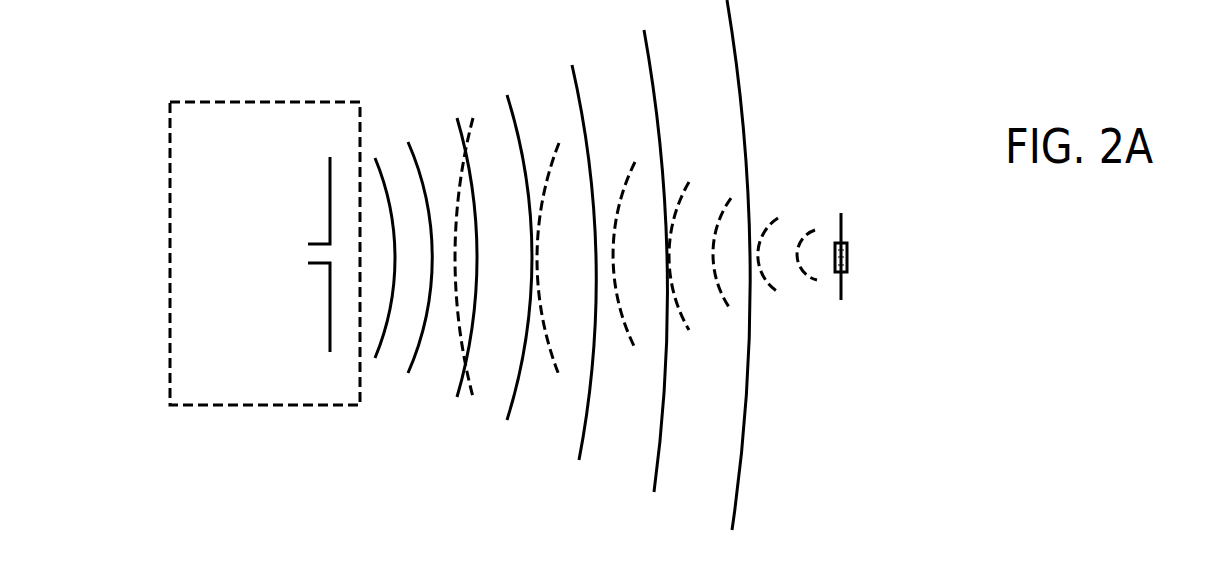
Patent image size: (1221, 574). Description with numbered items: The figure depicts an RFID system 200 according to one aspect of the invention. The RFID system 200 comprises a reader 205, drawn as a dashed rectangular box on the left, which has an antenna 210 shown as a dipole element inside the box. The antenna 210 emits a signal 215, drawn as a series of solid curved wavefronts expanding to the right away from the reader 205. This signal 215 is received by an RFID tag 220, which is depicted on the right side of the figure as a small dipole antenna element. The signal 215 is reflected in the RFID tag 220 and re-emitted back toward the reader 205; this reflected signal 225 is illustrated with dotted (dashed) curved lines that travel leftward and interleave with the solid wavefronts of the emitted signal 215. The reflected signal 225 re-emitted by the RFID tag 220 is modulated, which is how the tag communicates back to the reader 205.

The RFID system 200 is at (159, 451).
The reader 205 is at (237, 101).
The antenna 210 is at (329, 208).
The signal 215 is at (585, 430).
The RFID tag 220 is at (847, 257).
The reflected signal 225 is at (730, 201).